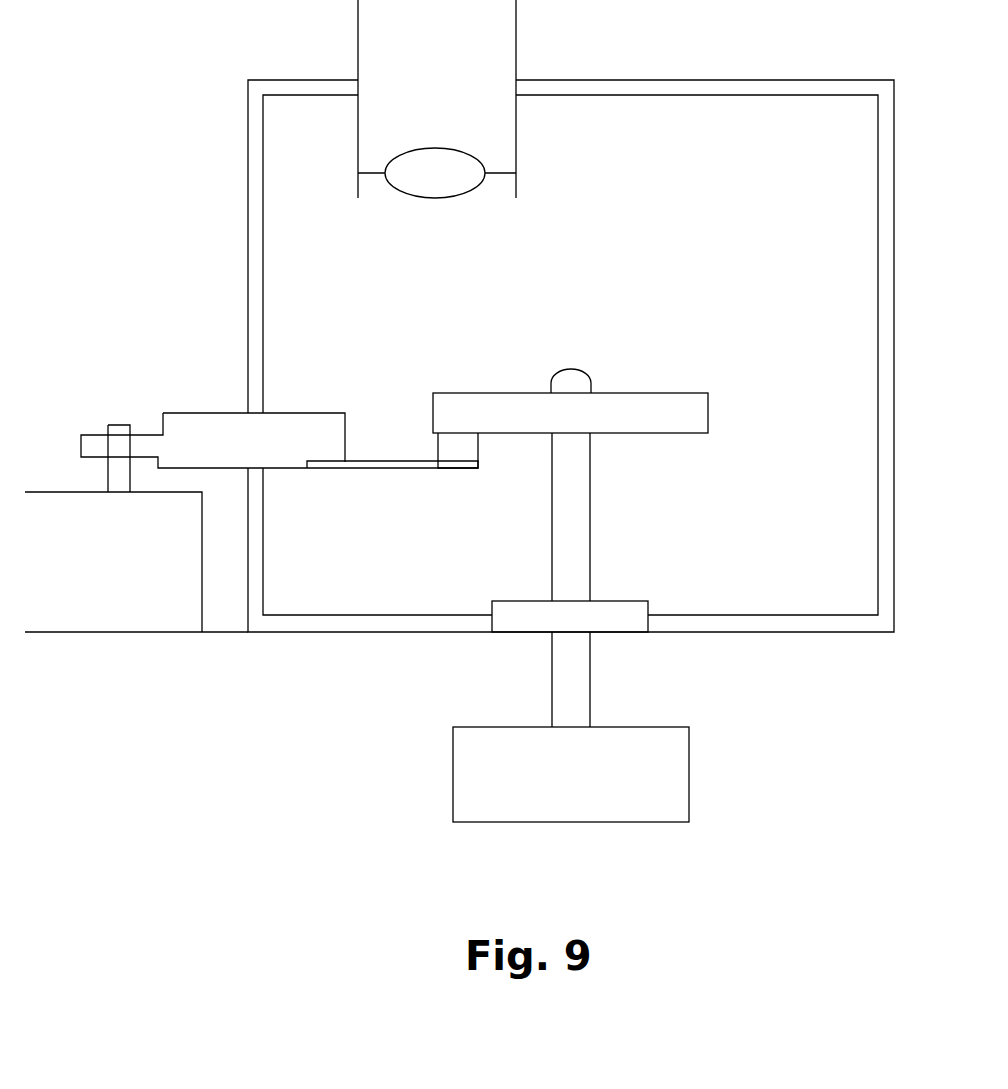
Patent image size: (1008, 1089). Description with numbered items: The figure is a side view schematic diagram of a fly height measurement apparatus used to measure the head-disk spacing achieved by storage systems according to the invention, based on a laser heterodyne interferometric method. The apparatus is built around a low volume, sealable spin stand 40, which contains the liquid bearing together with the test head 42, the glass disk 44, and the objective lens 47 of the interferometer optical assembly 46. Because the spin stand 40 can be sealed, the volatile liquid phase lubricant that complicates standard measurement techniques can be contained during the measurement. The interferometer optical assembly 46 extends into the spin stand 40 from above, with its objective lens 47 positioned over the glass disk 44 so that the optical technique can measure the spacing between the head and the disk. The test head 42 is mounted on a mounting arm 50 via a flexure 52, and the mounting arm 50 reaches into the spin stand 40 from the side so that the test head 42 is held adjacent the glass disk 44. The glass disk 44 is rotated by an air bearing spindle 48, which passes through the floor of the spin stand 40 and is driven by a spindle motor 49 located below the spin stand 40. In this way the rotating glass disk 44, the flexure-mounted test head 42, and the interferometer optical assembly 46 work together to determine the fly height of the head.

The spin stand 40 is at (812, 80).
The test head 42 is at (460, 450).
The glass disk 44 is at (708, 415).
The interferometer optical assembly 46 is at (517, 137).
The objective lens 47 is at (463, 193).
The air bearing spindle 48 is at (600, 598).
The spindle motor 49 is at (690, 766).
The mounting arm 50 is at (202, 412).
The flexure 52 is at (338, 470).